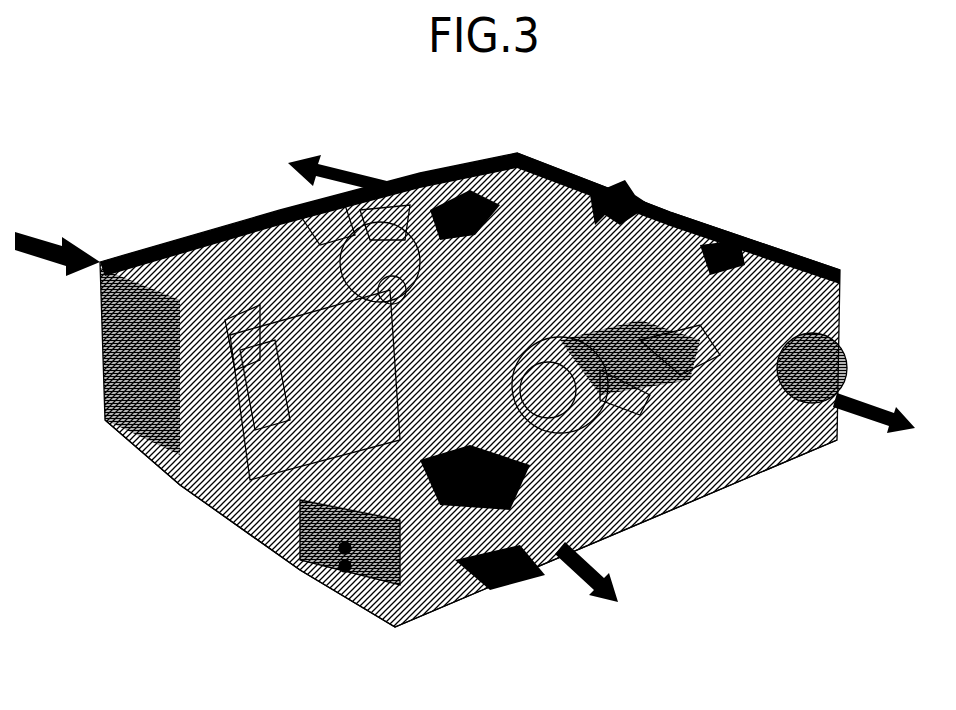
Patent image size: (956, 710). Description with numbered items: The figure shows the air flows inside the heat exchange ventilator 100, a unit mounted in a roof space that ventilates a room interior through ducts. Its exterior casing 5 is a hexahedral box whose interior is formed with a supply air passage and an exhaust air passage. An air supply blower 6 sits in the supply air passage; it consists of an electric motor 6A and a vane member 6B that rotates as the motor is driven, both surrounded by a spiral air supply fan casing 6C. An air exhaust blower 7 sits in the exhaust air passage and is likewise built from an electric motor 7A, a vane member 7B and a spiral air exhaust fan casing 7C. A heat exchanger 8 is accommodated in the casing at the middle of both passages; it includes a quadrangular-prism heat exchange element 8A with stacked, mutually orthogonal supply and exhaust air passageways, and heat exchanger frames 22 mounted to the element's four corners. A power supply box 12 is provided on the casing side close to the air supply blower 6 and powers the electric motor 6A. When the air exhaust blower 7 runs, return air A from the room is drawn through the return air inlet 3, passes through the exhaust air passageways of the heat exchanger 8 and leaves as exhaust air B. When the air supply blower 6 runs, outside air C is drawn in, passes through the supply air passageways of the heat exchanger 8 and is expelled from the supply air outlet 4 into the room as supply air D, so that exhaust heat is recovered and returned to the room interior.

The heat exchange ventilator 100 is at (647, 148).
The return air inlet 3 is at (837, 358).
The supply air outlet 4 is at (497, 583).
The exterior casing 5 is at (725, 233).
The air supply blower 6 is at (630, 420).
The electric motor 6A is at (595, 418).
The vane member 6B is at (637, 412).
The air supply fan casing 6C is at (662, 352).
The air exhaust blower 7 is at (357, 283).
The electric motor 7A is at (392, 293).
The vane member 7B is at (338, 222).
The air exhaust fan casing 7C is at (383, 223).
The heat exchanger 8 is at (252, 472).
The heat exchange element 8A is at (263, 412).
The power supply box 12 is at (303, 543).
The heat exchanger frame 22 is at (236, 345).
The return air A is at (887, 412).
The exhaust air B is at (308, 160).
The outside air C is at (40, 243).
The supply air D is at (607, 583).